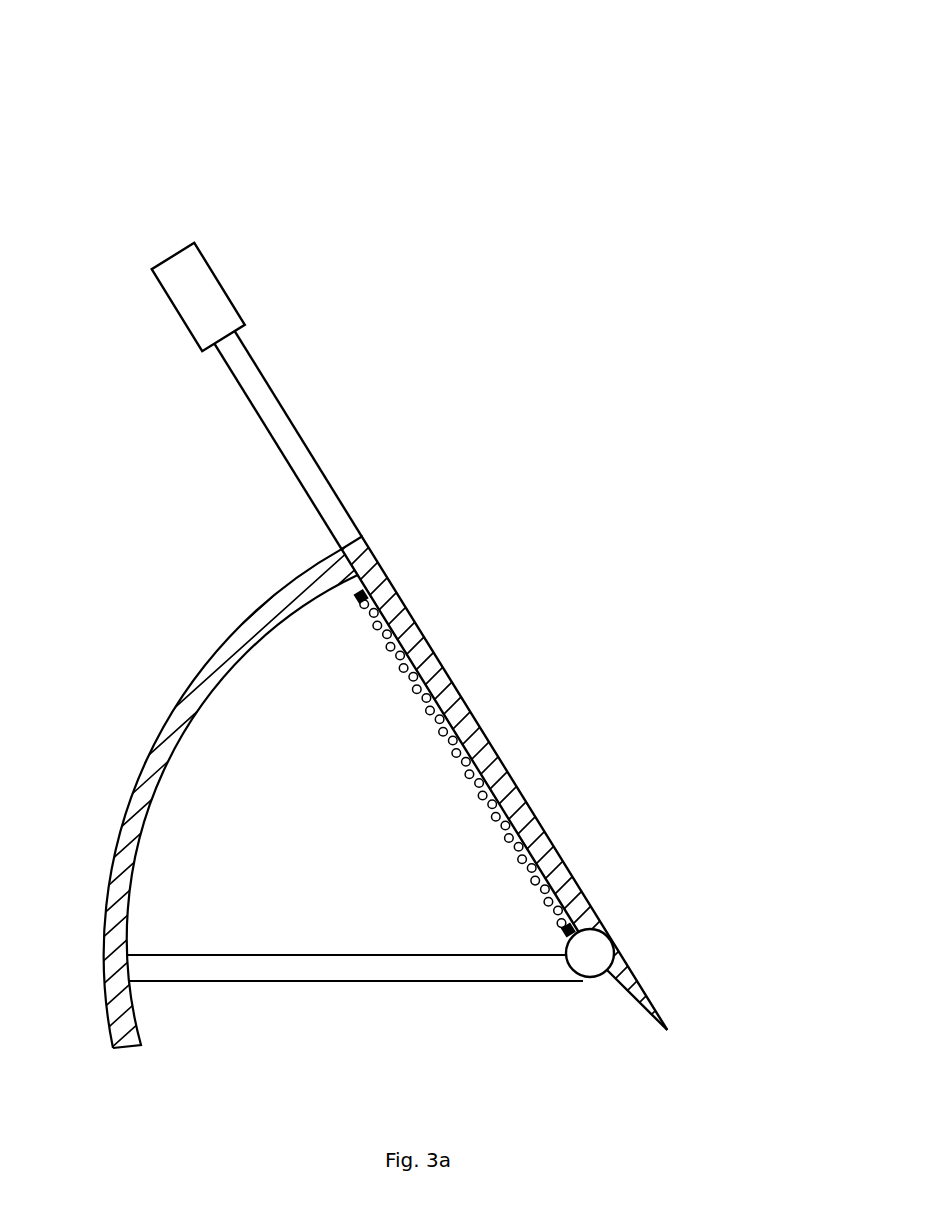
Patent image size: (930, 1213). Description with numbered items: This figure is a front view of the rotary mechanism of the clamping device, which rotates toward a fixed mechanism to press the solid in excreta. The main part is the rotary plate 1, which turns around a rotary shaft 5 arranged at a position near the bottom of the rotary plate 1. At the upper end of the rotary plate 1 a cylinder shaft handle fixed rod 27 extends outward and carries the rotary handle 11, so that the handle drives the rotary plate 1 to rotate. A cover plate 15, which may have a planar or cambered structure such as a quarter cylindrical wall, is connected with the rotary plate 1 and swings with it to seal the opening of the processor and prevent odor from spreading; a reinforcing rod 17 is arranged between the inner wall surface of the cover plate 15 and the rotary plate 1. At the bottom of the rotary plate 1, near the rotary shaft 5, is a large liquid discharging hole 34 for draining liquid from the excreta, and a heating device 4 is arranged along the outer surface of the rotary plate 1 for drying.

The rotary plate 1 is at (434, 648).
The heating device 4 is at (483, 790).
The rotary shaft 5 is at (595, 950).
The rotary handle 11 is at (203, 298).
The cover plate 15 is at (232, 662).
The reinforcing rod 17 is at (303, 973).
The cylinder shaft handle fixed rod 27 is at (323, 470).
The large liquid discharging hole 34 is at (638, 997).